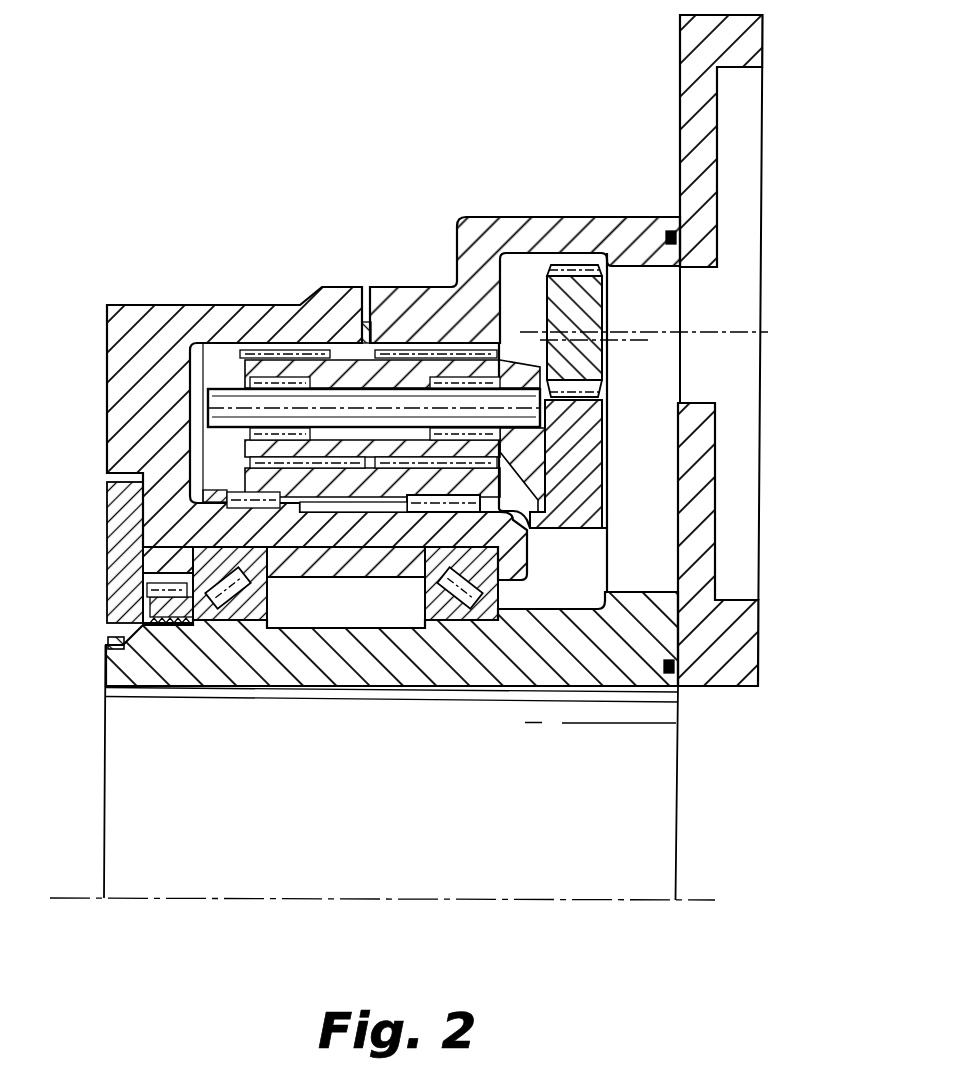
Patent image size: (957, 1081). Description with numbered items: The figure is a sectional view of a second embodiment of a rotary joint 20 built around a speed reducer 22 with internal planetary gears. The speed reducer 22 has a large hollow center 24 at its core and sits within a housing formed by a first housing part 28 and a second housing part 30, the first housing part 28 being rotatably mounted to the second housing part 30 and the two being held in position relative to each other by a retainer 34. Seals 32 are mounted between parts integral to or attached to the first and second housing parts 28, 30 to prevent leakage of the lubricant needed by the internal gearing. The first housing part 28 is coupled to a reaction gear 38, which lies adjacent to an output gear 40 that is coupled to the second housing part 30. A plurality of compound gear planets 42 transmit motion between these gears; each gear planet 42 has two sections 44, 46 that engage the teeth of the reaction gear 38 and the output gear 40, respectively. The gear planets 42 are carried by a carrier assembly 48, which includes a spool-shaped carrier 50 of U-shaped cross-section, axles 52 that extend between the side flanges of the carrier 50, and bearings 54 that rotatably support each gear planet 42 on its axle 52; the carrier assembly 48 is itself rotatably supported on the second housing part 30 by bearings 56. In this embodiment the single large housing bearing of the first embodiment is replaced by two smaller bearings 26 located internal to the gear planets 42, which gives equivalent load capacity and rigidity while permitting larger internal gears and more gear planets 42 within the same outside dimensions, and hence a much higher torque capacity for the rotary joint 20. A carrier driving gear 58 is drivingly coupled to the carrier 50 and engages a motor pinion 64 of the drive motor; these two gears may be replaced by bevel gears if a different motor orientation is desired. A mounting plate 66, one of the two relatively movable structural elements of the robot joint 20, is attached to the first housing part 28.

The rotary joint 20 is at (414, 165).
The speed reducer 22 is at (607, 423).
The hollow center 24 is at (488, 686).
The bearings 26 is at (256, 625).
The first housing part 28 is at (584, 210).
The second housing part 30 is at (134, 298).
The seals 32 is at (375, 335).
The retainer 34 is at (143, 578).
The reaction gear 38 is at (443, 350).
The output gear 40 is at (287, 342).
The compound gear planet 42 is at (329, 336).
The first section of gear planet 44 is at (487, 353).
The second section of gear planet 46 is at (200, 370).
The carrier assembly 48 is at (190, 487).
The spool-shaped carrier 50 is at (193, 472).
The axle 52 is at (215, 397).
The bearings 54 is at (217, 363).
The bearings 56 is at (226, 560).
The gear 58 is at (600, 475).
The motor pinion 64 is at (608, 310).
The mounting plate 66 is at (680, 70).